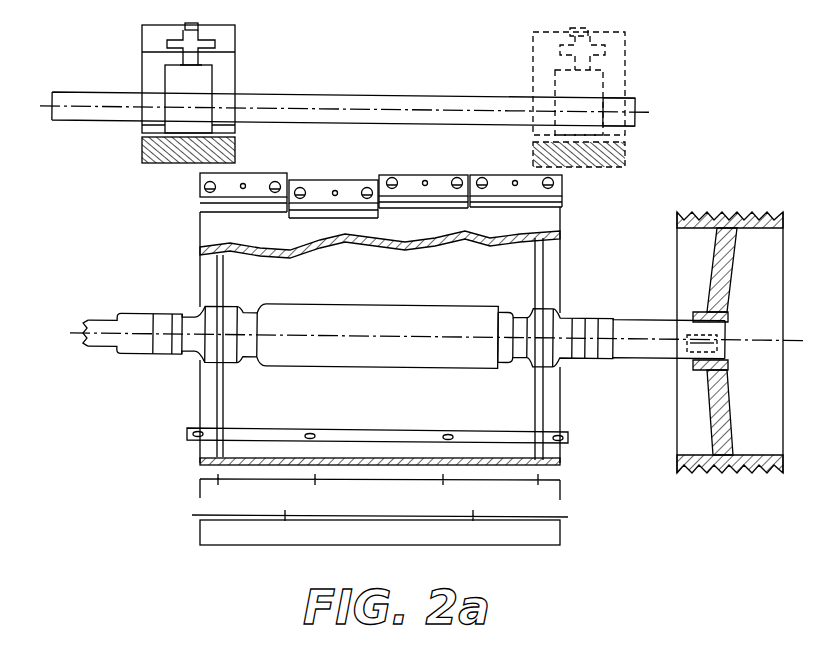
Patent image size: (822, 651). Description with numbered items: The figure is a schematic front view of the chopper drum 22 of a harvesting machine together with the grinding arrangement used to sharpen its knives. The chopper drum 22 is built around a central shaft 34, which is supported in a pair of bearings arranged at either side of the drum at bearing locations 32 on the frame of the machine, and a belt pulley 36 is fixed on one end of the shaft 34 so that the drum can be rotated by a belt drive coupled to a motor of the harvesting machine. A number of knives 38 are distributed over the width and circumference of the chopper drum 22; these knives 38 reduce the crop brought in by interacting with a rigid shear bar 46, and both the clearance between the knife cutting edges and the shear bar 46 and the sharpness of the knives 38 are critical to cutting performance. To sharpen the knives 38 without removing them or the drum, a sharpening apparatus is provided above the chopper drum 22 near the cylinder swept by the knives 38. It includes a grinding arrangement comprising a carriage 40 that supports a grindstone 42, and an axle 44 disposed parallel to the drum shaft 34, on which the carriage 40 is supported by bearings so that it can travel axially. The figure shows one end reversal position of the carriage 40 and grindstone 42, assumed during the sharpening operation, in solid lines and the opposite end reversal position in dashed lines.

The chopper drum 22 is at (213, 234).
The bearing locations 32 is at (150, 353).
The central shaft 34 is at (348, 352).
The belt pulley 36 is at (750, 212).
The knives 38 is at (200, 193).
The carriage 40 is at (142, 76).
The grindstone 42 is at (142, 150).
The axle 44 is at (412, 102).
The shear bar 46 is at (513, 498).